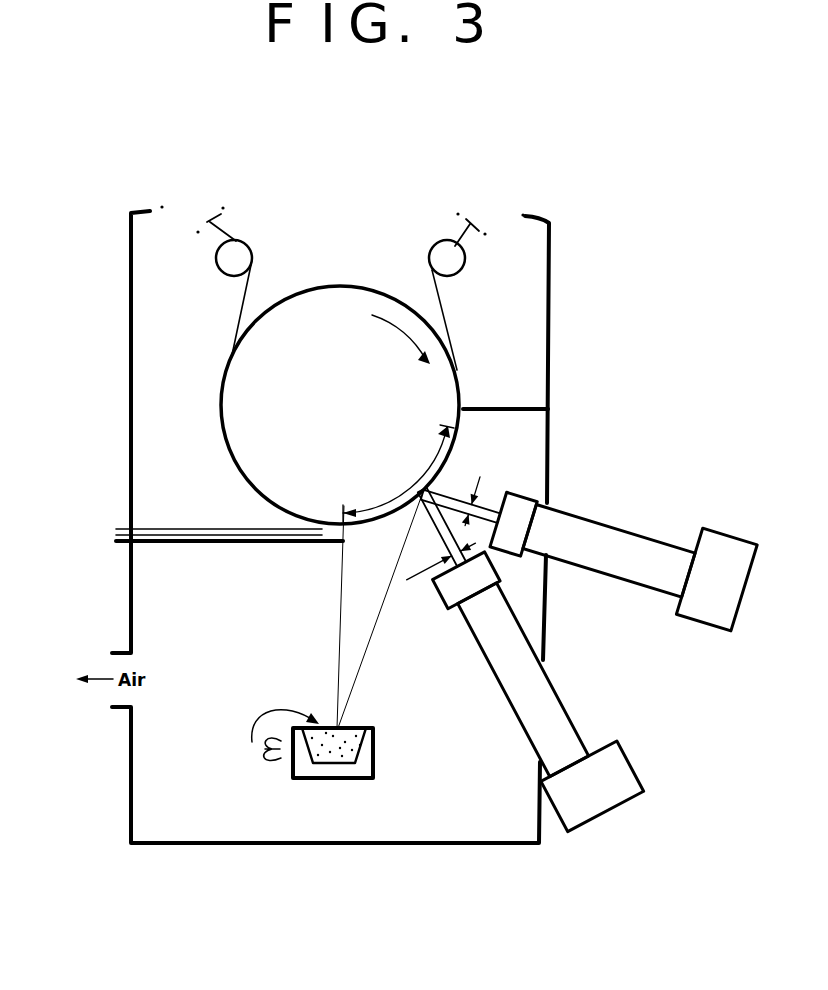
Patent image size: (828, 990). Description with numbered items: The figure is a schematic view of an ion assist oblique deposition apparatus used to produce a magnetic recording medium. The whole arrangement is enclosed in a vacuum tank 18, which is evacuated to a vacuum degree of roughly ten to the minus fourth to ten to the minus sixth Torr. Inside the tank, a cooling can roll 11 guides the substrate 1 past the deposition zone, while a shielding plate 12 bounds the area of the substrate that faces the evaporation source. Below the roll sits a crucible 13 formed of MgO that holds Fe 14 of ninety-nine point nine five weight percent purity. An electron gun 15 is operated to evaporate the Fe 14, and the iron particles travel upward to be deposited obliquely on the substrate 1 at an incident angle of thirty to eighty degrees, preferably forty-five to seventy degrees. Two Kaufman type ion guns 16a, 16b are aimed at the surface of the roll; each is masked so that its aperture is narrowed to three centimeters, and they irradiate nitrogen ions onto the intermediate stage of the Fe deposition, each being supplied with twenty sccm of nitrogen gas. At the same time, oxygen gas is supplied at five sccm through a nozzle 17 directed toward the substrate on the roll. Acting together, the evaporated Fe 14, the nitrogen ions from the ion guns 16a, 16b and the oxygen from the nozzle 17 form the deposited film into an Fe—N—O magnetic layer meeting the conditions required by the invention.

The substrate 1 is at (453, 233).
The cooling can roll 11 is at (322, 306).
The shielding plate 12 is at (192, 545).
The crucible 13 is at (375, 768).
The Fe 14 is at (352, 735).
The electron gun 15 is at (268, 765).
The ion gun 16a is at (617, 535).
The ion gun 16b is at (572, 738).
The nozzle 17 is at (180, 528).
The vacuum tank 18 is at (131, 348).